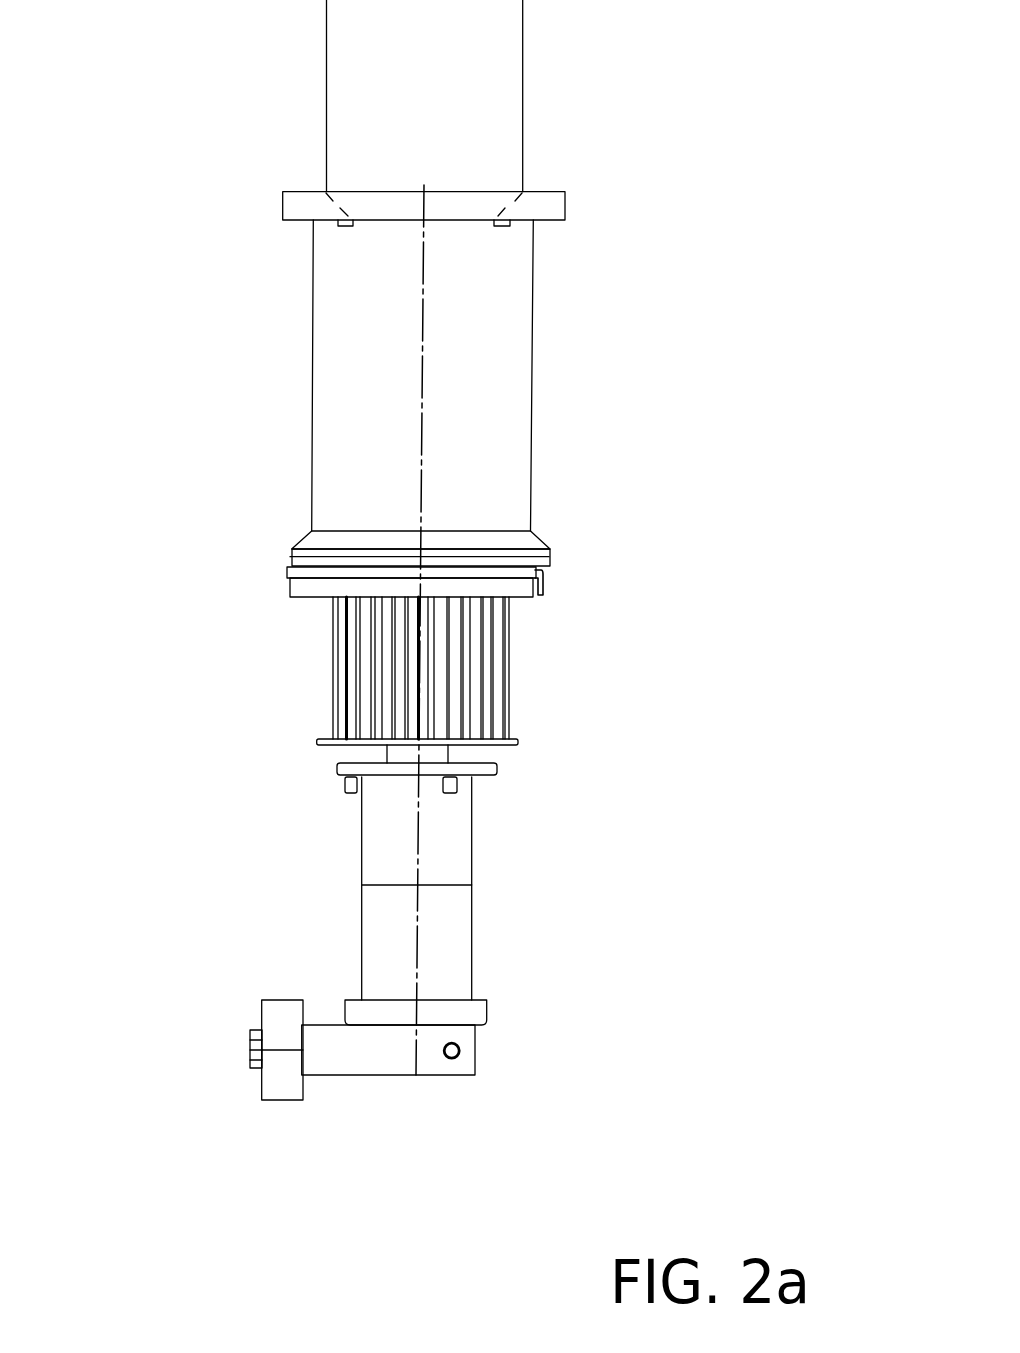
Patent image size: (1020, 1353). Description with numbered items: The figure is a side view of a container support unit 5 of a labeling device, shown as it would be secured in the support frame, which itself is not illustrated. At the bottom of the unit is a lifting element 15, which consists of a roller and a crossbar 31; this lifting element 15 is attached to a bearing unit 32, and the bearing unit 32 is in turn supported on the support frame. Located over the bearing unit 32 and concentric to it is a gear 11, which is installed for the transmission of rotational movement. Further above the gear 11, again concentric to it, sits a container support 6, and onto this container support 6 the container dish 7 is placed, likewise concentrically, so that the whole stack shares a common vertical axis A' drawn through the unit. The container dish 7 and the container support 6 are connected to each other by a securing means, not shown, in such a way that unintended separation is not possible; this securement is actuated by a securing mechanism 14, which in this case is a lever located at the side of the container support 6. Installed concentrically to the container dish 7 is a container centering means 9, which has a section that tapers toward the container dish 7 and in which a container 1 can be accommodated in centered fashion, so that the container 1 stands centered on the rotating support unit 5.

The container 1 is at (347, 115).
The container centering means 9 is at (550, 202).
The axis A' is at (527, 630).
The container dish 7 is at (510, 477).
The container support 6 is at (297, 592).
The securing mechanism 14 is at (543, 592).
The gear 11 is at (485, 688).
The container support unit 5 is at (580, 780).
The bearing unit 32 is at (452, 947).
The crossbar 31 is at (378, 1057).
The lifting element 15 is at (280, 1025).